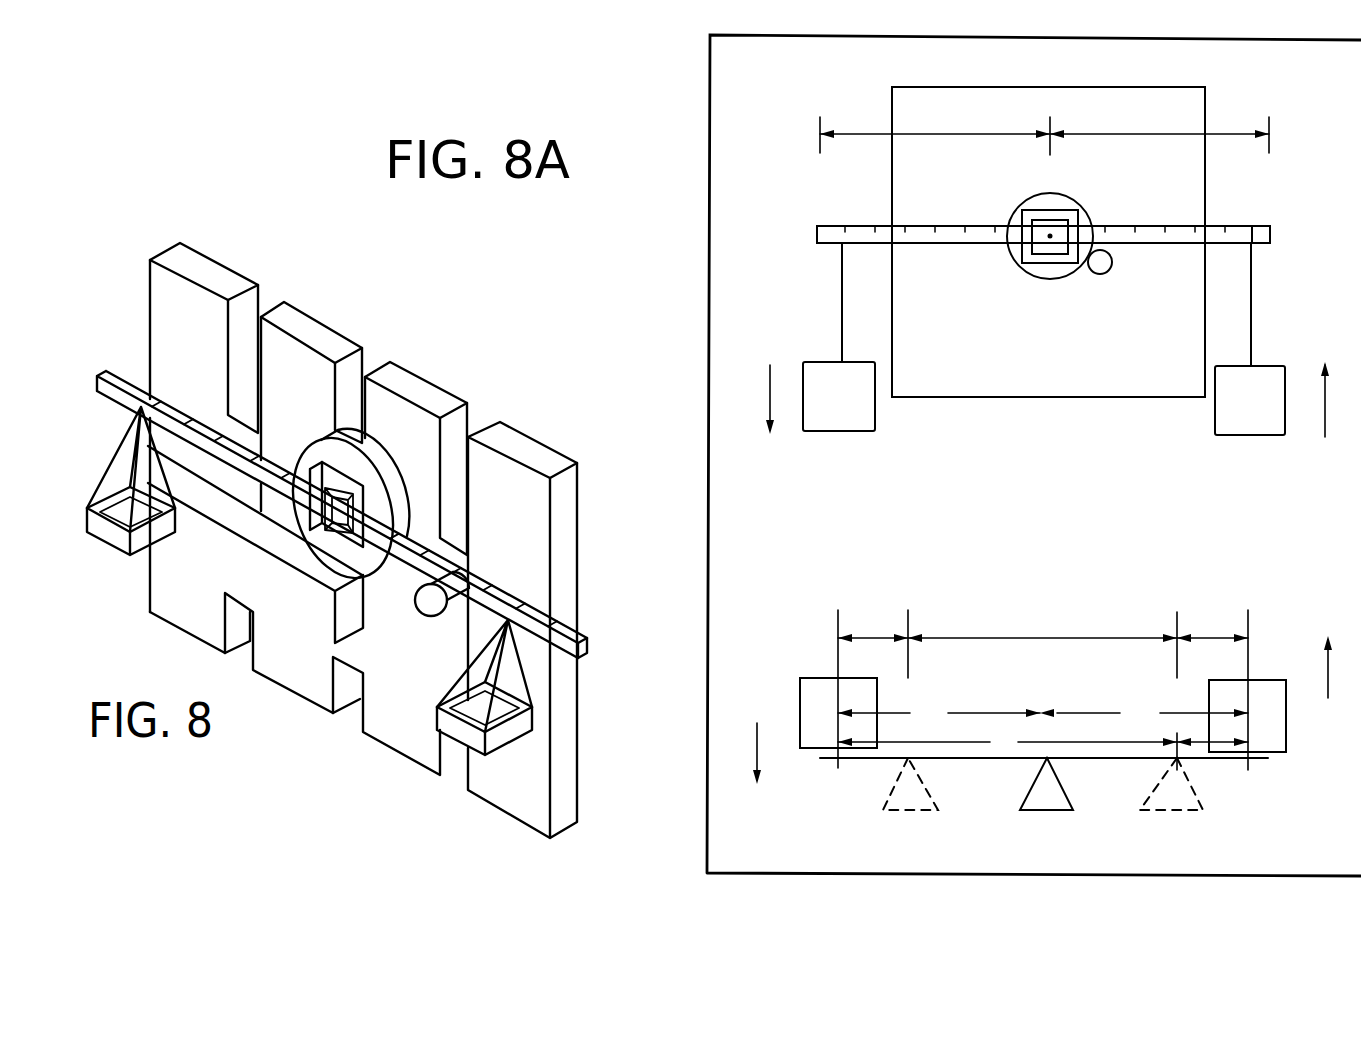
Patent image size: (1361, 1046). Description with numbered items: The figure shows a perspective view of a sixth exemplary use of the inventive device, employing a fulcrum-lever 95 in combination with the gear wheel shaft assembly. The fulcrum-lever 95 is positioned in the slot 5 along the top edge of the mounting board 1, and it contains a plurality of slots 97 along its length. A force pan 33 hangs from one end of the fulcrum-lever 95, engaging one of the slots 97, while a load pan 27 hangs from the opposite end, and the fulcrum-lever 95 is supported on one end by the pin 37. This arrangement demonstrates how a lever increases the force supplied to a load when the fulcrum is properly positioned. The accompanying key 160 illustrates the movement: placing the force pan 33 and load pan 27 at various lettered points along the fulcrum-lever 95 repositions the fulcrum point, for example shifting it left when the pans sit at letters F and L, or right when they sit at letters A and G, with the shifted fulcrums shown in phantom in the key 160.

In FIG. 8, the mounting board 1 is at (298, 314).
In FIG. 8, the slot 5 is at (368, 362).
In FIG. 8, the load pan 27 is at (438, 715).
In FIG. 8, the force pan 33 is at (112, 537).
In FIG. 8, the pin 37 is at (462, 598).
In FIG. 8, the fulcrum-lever 95 is at (586, 642).
In FIG. 8, the slots 97 is at (197, 394).
In FIG. 8A, the key 160 is at (692, 283).